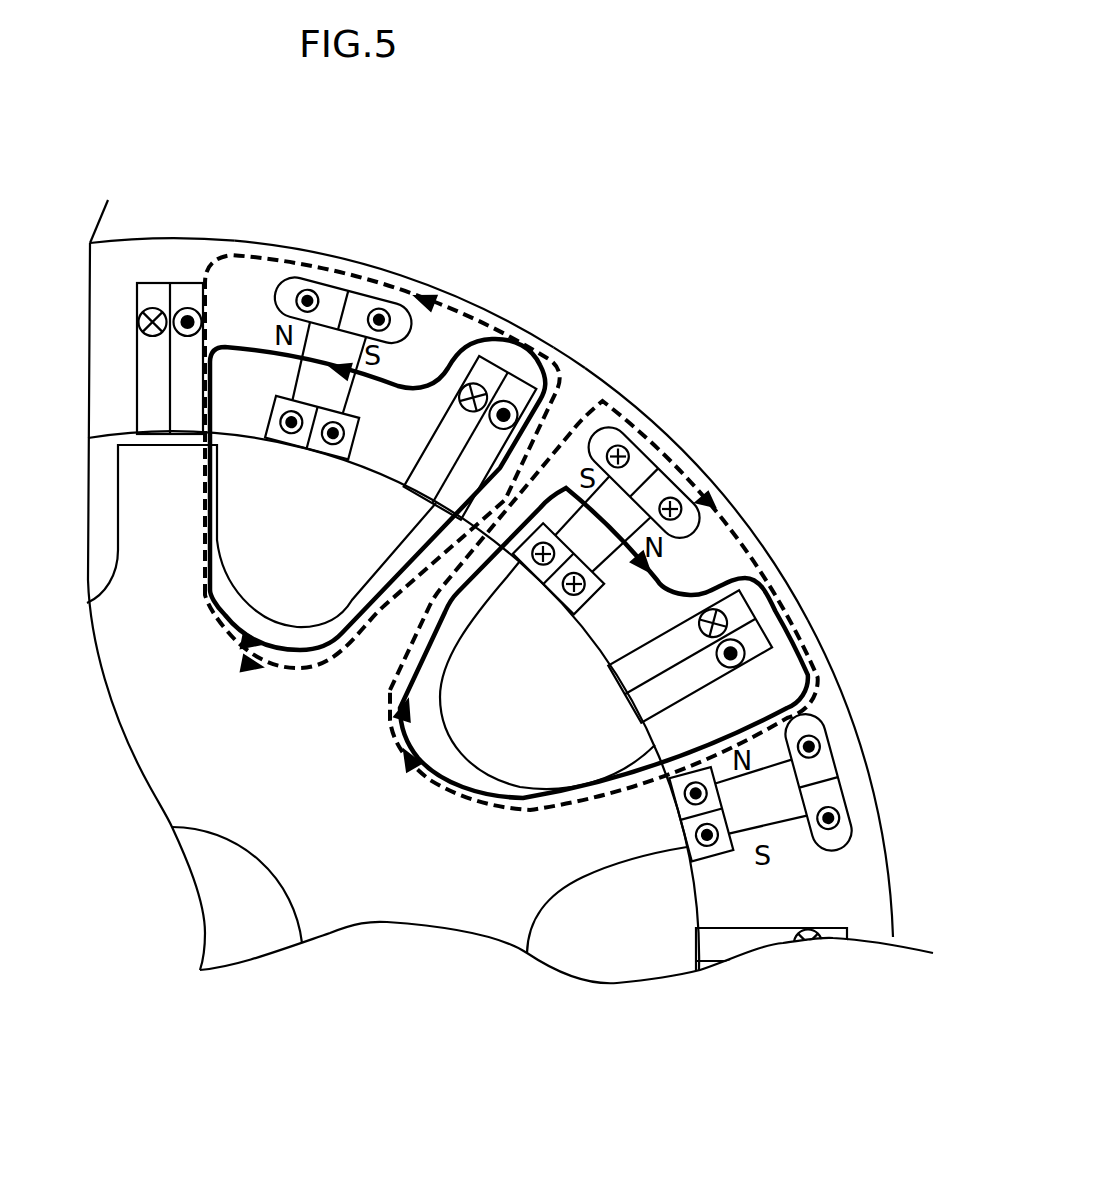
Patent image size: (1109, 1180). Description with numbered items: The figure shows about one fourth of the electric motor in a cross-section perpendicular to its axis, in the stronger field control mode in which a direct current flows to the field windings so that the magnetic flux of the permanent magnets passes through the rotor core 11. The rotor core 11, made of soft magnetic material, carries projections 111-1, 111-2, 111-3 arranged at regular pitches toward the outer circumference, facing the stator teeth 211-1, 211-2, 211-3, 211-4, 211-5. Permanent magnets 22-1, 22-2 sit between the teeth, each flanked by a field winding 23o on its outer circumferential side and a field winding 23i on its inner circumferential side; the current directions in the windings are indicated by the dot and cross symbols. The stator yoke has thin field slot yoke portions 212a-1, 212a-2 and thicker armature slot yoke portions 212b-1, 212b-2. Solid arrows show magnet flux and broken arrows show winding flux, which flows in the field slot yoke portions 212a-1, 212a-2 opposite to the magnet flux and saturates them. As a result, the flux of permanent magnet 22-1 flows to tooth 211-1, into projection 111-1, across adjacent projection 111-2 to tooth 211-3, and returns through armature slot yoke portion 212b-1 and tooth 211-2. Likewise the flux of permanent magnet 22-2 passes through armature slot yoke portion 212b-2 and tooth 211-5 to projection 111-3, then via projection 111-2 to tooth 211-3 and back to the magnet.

The rotor core 11 is at (385, 950).
The projection 111-1 is at (133, 514).
The projection 111-2 is at (493, 580).
The projection 111-3 is at (608, 860).
The tooth 211-1 is at (227, 422).
The tooth 211-2 is at (377, 453).
The tooth 211-3 is at (445, 545).
The tooth 211-4 is at (600, 642).
The tooth 211-5 is at (660, 765).
The field slot yoke portion 212a-1 is at (372, 275).
The armature slot yoke portion 212b-1 is at (493, 322).
The field slot yoke portion 212a-2 is at (680, 458).
The armature slot yoke portion 212b-2 is at (778, 582).
The permanent magnet 22-1 is at (347, 335).
The permanent magnet 22-2 is at (695, 556).
The field winding 23o is at (306, 287).
The field winding 23i is at (320, 447).